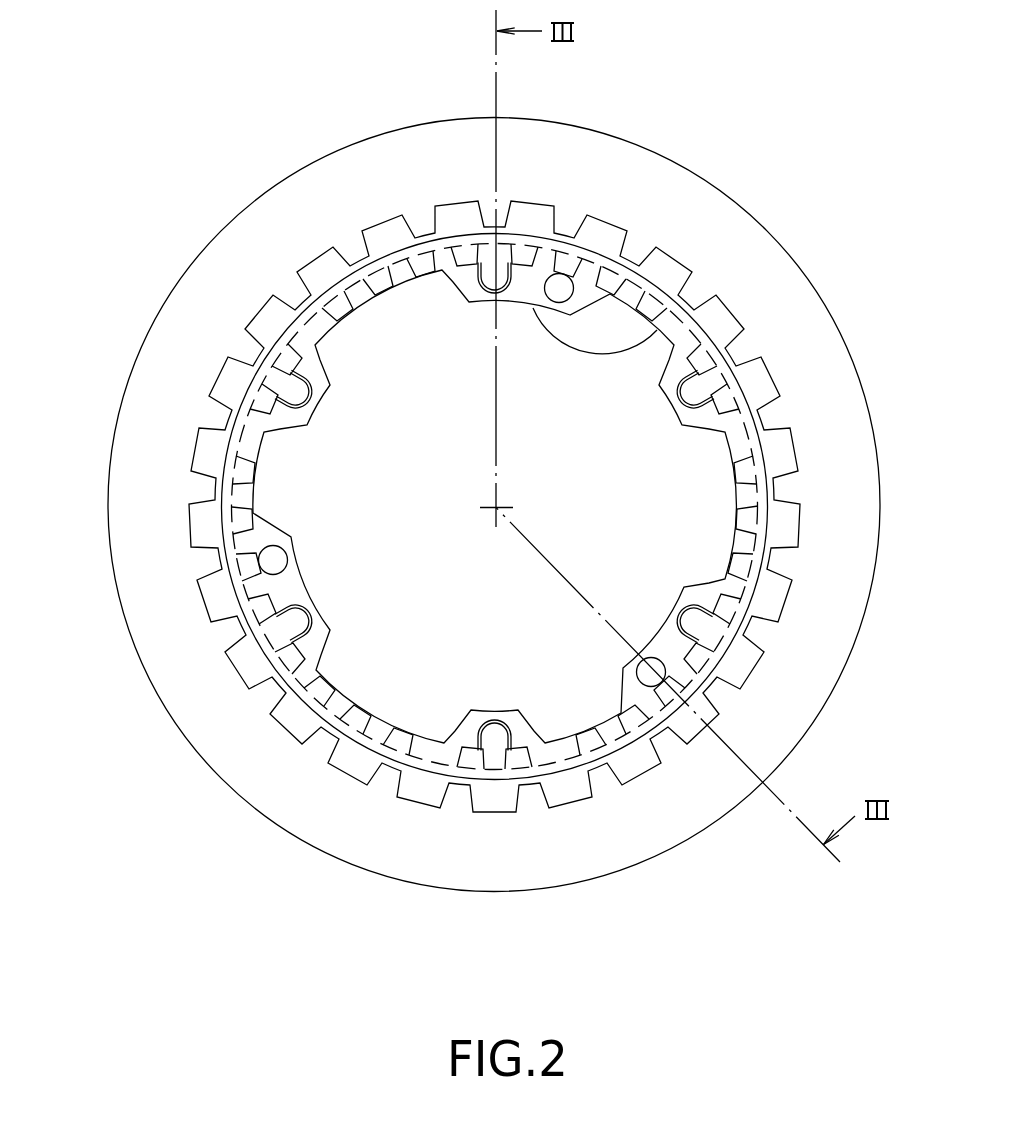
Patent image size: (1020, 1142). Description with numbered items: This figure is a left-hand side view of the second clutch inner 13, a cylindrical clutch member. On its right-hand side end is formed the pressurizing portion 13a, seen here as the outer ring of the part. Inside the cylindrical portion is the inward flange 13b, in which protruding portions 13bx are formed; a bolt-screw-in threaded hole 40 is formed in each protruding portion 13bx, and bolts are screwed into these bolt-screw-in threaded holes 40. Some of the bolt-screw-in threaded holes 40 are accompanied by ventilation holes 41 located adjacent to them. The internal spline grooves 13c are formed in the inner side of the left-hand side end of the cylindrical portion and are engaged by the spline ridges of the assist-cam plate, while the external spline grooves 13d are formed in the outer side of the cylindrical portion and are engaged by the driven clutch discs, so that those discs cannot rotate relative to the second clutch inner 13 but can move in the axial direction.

The second clutch inner 13 is at (267, 134).
The pressurizing portion 13a is at (413, 153).
The inward flange 13b is at (740, 398).
The protruding portions 13bx is at (645, 340).
The internal spline grooves 13c is at (748, 521).
The external spline grooves 13d is at (247, 350).
The bolt-screw-in threaded holes 40 is at (504, 274).
The ventilation holes 41 is at (565, 288).